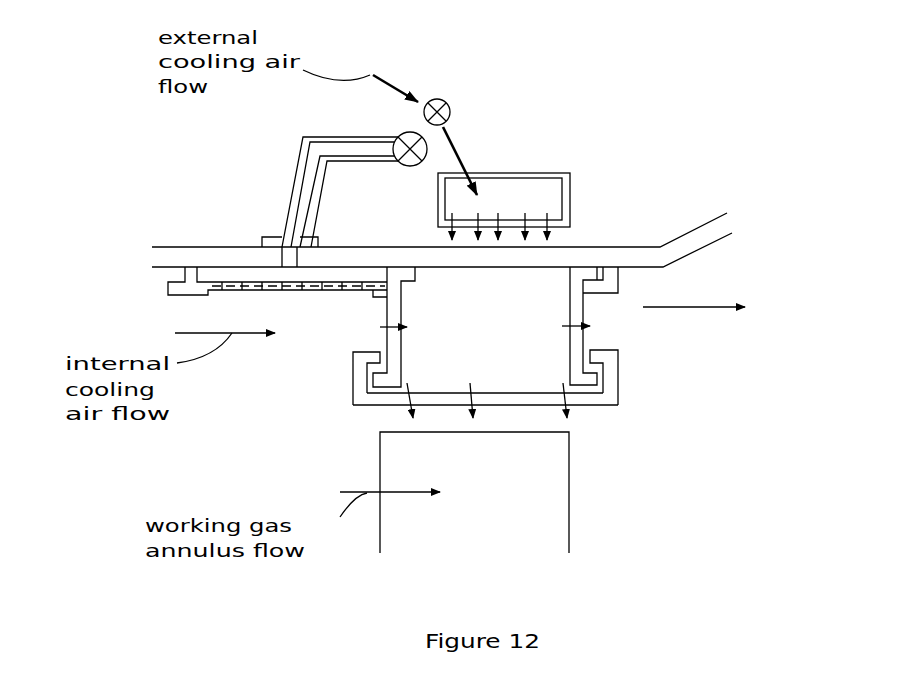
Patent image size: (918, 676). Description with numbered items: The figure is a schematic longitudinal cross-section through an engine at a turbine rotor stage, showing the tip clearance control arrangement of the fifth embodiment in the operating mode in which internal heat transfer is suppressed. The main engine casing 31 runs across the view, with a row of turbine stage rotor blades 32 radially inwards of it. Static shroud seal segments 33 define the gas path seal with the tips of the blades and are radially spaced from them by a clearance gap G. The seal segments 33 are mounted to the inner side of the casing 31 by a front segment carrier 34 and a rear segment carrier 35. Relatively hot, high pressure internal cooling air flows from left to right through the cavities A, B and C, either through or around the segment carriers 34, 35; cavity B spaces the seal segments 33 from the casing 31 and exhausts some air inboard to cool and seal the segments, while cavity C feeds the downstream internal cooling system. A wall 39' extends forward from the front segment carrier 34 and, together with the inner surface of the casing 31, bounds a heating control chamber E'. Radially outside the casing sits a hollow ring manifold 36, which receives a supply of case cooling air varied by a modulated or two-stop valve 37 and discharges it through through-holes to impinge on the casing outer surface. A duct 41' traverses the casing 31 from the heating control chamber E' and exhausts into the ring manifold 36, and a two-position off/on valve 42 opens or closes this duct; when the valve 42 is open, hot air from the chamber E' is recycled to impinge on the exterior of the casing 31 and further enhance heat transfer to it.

The main engine casing 31 is at (183, 255).
The turbine stage rotor blades 32 is at (491, 536).
The static shroud seal segments 33 is at (582, 402).
The front segment carrier 34 is at (393, 353).
The rear segment carrier 35 is at (575, 351).
The hollow ring manifold 36 is at (567, 195).
The modulated or two-stop valve 37 is at (440, 98).
The wall 39' is at (233, 290).
The duct 41' is at (306, 202).
The two-position off/on valve 42 is at (398, 135).
The heating control chamber E' is at (205, 228).
The cavity A is at (330, 338).
The cavity B is at (488, 343).
The cavity C is at (710, 344).
The clearance gap G is at (380, 418).